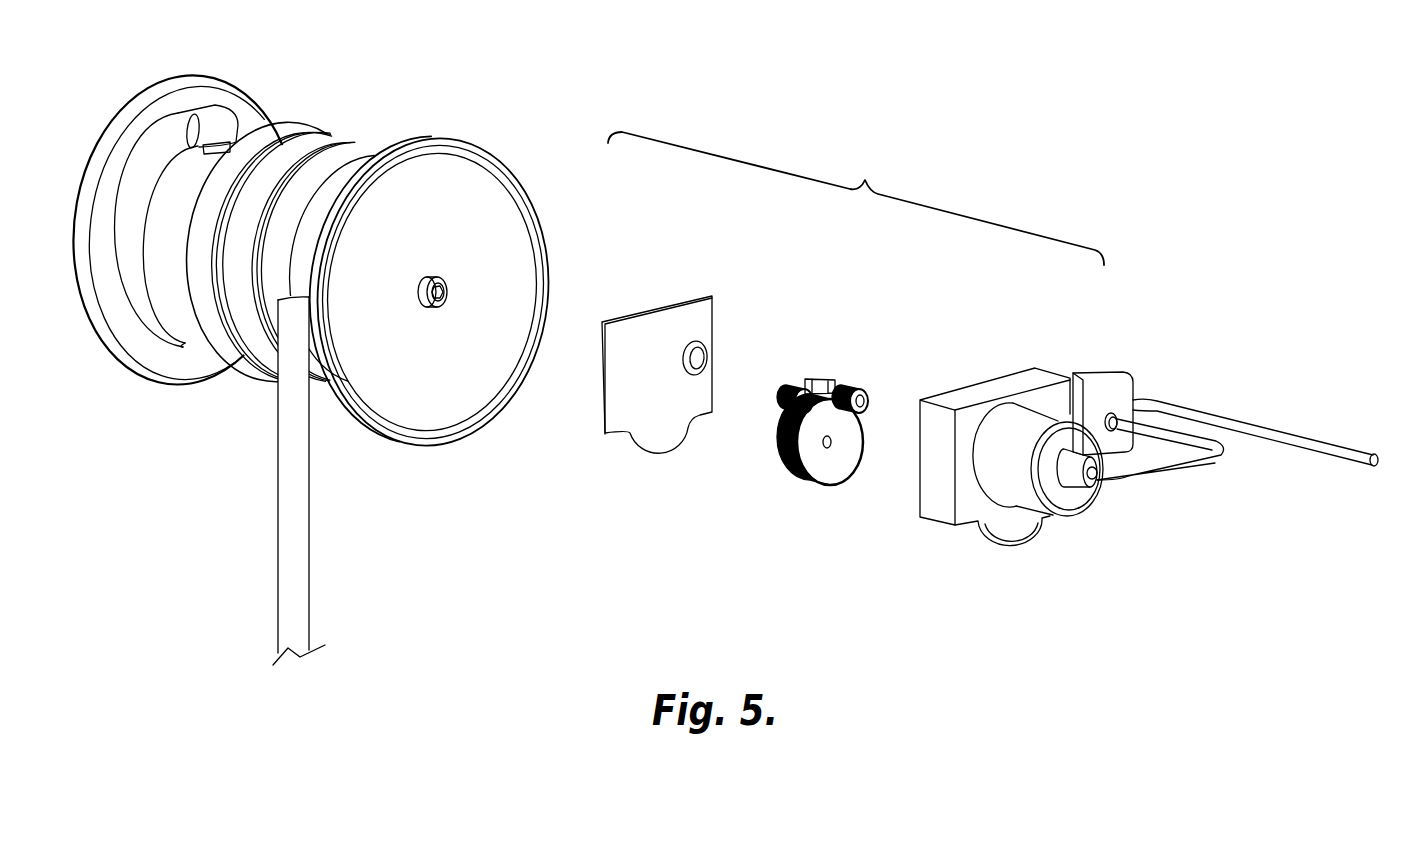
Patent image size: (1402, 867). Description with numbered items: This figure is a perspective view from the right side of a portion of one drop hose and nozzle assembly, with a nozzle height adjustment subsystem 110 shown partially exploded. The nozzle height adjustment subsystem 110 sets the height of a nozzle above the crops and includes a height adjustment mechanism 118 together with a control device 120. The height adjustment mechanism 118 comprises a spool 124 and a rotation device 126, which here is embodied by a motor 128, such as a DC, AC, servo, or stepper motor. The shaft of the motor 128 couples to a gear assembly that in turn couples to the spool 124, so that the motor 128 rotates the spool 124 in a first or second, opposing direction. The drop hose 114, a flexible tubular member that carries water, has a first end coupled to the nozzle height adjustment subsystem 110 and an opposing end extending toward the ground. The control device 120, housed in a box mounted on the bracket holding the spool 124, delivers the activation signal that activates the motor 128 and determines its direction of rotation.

The nozzle height adjustment subsystem 110 is at (1162, 327).
The drop hose 114 is at (292, 555).
The height adjustment mechanism 118 is at (942, 551).
The control device 120 is at (1106, 360).
The spool 124 is at (470, 133).
The rotation device 126 is at (1088, 523).
The motor 128 is at (1140, 453).